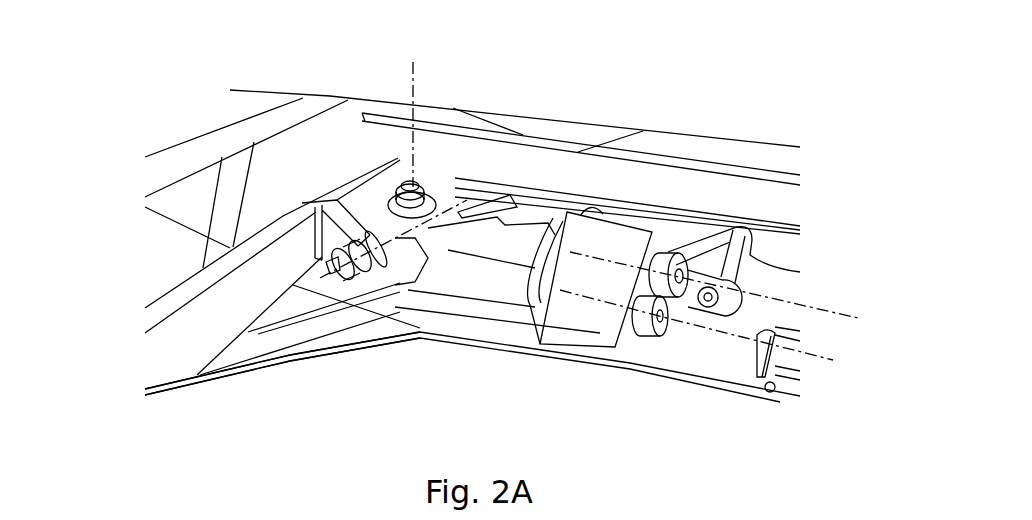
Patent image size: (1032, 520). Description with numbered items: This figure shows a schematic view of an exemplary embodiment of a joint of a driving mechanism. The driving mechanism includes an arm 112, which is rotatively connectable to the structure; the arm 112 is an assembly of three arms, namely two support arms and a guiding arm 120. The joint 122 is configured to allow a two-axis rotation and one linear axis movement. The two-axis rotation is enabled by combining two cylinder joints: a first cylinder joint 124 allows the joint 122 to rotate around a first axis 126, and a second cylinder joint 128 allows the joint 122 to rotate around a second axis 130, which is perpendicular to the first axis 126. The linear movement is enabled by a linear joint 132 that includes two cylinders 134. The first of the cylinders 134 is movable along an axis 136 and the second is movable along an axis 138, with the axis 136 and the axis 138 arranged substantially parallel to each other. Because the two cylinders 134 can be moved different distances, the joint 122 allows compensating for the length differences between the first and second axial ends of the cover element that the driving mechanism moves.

The arm 112 is at (200, 317).
The guiding arm 120 is at (200, 317).
The joint 122 is at (560, 190).
The first cylinder joint 124 is at (326, 262).
The first axis 126 is at (430, 220).
The second cylinder joint 128 is at (438, 197).
The second axis 130 is at (408, 156).
The linear joint 132 is at (588, 307).
The cylinders 134 is at (668, 285).
The axis 136 is at (824, 312).
The axis 138 is at (818, 358).